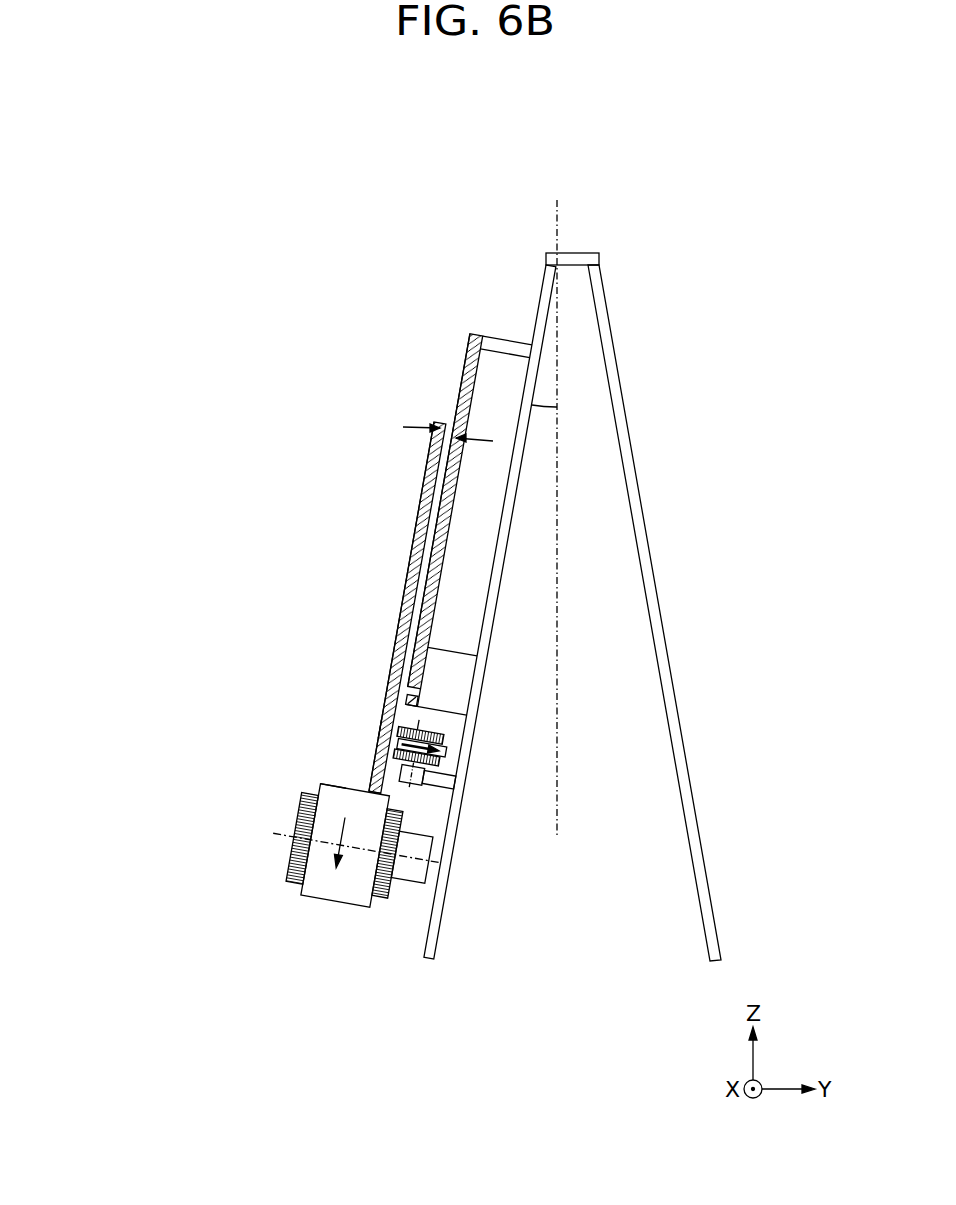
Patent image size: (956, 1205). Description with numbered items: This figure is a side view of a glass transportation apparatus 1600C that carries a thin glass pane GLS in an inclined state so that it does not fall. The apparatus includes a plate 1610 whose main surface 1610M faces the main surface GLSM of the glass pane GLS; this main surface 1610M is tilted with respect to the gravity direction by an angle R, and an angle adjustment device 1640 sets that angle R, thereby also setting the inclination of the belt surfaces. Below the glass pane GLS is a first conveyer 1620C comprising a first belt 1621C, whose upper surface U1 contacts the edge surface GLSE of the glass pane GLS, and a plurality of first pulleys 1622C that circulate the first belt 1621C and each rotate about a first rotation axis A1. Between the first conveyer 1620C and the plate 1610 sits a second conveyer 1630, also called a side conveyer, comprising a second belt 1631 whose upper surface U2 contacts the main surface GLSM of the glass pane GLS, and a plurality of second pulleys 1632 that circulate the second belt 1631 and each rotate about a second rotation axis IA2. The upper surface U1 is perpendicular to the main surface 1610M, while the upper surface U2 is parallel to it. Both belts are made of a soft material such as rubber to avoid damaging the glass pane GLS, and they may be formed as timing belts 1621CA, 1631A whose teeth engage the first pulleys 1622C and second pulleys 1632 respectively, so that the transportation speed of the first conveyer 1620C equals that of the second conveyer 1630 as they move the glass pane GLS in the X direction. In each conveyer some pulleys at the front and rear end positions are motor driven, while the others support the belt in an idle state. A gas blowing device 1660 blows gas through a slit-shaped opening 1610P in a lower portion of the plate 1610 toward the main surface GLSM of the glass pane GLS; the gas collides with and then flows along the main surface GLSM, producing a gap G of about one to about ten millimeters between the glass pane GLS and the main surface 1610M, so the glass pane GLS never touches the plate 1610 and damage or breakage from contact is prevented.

The glass transportation apparatus 1600C is at (708, 177).
The angle adjustment device 1640 is at (608, 345).
The angle R is at (544, 517).
The plate 1610 is at (471, 345).
The main surface 1610M is at (465, 371).
The opening 1610P is at (405, 688).
The glass pane GLS is at (427, 467).
The main surface GLSM is at (420, 502).
The edge surface GLSE is at (382, 790).
The gap G is at (448, 419).
The gas blowing device 1660 is at (443, 680).
The upper surface U2 is at (382, 737).
The upper surface U1 is at (350, 787).
The second rotation axis IA2 is at (434, 722).
The second conveyer 1630 is at (530, 760).
The second belt 1631 is at (445, 752).
The timing belt 1631A is at (422, 748).
The second pulleys 1632 is at (447, 773).
The first conveyer 1620C is at (239, 833).
The first belt 1621C is at (333, 798).
The timing belt 1621CA is at (404, 856).
The first pulleys 1622C is at (307, 815).
The first rotation axis A1 is at (342, 841).